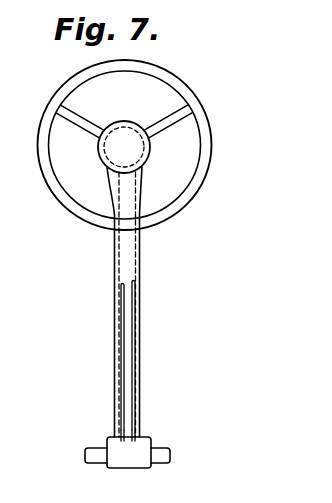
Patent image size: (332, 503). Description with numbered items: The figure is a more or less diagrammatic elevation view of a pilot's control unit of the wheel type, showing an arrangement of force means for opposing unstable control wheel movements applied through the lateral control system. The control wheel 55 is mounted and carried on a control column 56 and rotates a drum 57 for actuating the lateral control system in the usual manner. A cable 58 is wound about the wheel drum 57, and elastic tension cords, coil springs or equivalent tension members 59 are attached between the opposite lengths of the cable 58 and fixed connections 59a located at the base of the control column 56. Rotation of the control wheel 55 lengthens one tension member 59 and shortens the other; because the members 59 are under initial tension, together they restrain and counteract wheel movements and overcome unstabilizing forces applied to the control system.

The control wheel 55 is at (205, 133).
The control column 56 is at (141, 270).
The drum 57 is at (136, 126).
The cable 58 is at (117, 255).
The tension members 59 is at (138, 366).
The fixed connections 59a is at (126, 435).